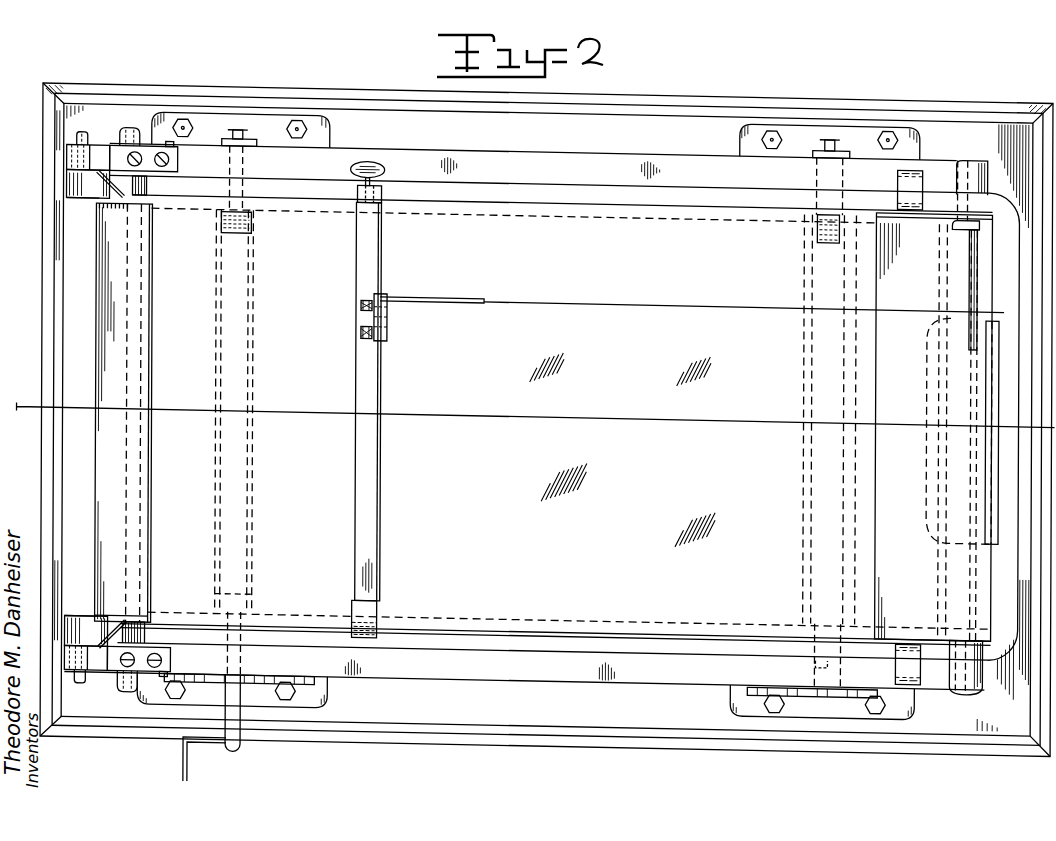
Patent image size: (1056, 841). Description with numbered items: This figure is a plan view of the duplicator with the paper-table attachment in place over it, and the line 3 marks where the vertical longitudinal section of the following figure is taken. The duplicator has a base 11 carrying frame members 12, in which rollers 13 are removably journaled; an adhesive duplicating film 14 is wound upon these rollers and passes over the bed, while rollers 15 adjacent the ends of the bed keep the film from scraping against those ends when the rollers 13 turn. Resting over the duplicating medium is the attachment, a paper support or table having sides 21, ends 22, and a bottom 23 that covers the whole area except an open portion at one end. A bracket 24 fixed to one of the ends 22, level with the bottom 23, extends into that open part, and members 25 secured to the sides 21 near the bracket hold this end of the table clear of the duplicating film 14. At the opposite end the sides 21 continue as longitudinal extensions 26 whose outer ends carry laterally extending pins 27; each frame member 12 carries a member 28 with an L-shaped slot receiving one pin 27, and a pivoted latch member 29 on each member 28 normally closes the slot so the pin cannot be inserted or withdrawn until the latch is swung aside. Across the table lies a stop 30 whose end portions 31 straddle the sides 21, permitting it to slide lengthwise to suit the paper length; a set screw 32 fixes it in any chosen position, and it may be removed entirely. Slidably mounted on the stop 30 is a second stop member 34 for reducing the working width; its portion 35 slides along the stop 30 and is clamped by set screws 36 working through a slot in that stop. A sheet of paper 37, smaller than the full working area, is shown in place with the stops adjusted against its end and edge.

The section line 3— 3 is at (533, 429).
The base 11 is at (45, 139).
The frame members 12 is at (495, 149).
The rollers 13 is at (250, 354).
The adhesive duplicating film 14 is at (944, 278).
The rollers 15 is at (100, 204).
The sides 21 is at (566, 192).
The ends 22 is at (153, 498).
The bottom 23 is at (570, 418).
The bracket 24 is at (938, 525).
The members 25 is at (923, 165).
The longitudinal extensions 26 is at (109, 184).
The pins 27 is at (82, 131).
The member 28 is at (67, 158).
The latch members 29 is at (124, 126).
The stop 30 is at (384, 266).
The end portions 31 is at (358, 189).
The set screw 32 is at (385, 162).
The second stop member 34 is at (470, 290).
The portion 35 is at (390, 317).
The set screws 36 is at (362, 299).
The sheet of paper 37 is at (643, 296).